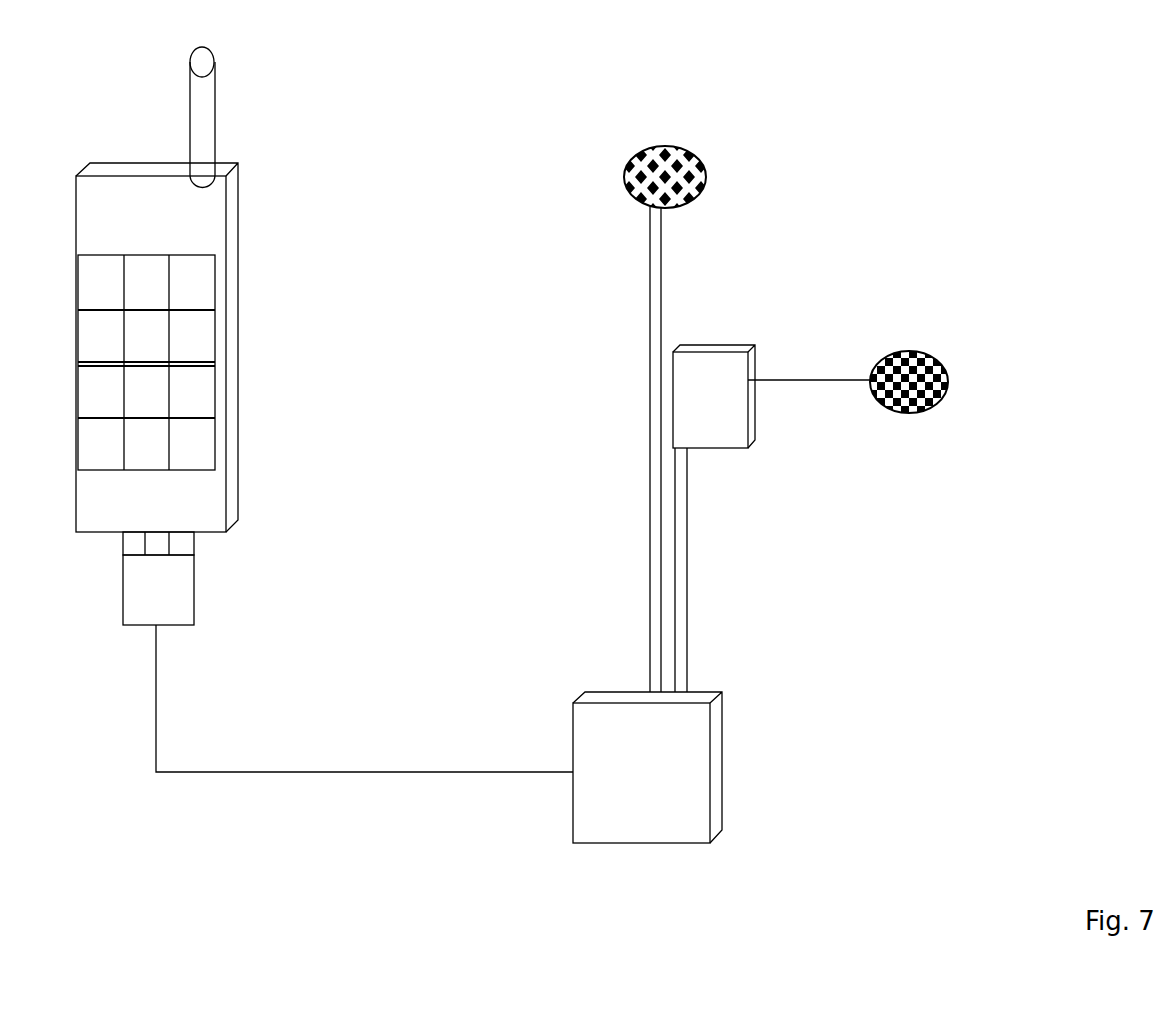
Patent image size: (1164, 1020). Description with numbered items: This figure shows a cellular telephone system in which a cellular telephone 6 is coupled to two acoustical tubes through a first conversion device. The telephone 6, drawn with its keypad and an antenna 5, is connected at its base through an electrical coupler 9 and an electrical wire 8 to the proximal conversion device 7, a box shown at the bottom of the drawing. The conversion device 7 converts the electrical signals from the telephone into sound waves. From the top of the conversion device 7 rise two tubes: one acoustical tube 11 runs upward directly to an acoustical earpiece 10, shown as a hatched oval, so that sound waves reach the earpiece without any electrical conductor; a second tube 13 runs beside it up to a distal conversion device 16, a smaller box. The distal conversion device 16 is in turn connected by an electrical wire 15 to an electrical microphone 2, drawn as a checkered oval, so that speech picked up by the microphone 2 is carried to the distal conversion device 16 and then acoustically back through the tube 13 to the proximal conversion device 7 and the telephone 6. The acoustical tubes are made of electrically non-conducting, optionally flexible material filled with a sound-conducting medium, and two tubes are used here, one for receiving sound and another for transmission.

The electrical microphone 2 is at (955, 380).
The antenna 5 is at (237, 93).
The cellular telephone 6 is at (240, 360).
The conversion device 7 is at (723, 762).
The electrical wire 8 is at (355, 772).
The electrical coupler 9 is at (197, 563).
The acoustical earpiece 10 is at (625, 145).
The acoustical tube 11 is at (685, 270).
The wire 13 is at (707, 553).
The electrical wire 15 is at (823, 343).
The distal conversion device 16 is at (757, 448).